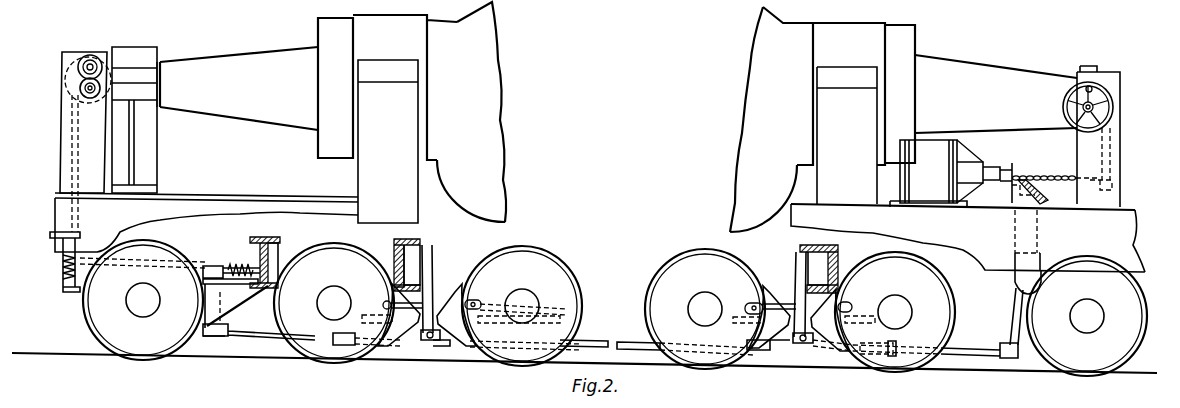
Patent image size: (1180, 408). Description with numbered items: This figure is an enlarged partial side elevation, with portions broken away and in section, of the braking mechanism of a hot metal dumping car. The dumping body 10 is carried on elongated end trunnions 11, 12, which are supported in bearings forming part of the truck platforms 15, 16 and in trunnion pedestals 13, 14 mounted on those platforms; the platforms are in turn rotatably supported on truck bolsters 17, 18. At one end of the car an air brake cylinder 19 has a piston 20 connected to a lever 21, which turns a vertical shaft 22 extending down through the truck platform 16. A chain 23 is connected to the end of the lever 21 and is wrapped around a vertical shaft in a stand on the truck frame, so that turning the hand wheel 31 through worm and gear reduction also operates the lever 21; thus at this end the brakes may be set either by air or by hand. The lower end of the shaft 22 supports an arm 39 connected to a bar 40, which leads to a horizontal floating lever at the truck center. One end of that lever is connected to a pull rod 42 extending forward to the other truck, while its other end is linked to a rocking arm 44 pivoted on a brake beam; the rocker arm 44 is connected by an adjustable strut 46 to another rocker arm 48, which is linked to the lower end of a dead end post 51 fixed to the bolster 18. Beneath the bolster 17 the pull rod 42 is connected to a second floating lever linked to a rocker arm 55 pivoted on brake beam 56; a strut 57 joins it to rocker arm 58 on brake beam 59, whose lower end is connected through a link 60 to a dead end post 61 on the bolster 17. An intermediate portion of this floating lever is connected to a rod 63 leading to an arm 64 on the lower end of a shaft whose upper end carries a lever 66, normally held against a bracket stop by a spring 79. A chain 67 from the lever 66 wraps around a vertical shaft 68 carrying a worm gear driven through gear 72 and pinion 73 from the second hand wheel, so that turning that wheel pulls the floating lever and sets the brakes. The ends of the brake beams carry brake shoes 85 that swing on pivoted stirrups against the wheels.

The hot metal dumping body 10 is at (412, 112).
The end trunnion 11 is at (227, 58).
The end trunnion 12 is at (990, 72).
The trunnion pedestal 13 is at (132, 53).
The trunnion pedestal 14 is at (1107, 78).
The truck platform 15 is at (53, 205).
The truck platform 16 is at (1133, 225).
The truck bolster 17 is at (280, 250).
The truck bolster 18 is at (838, 262).
The brake cylinder 19 is at (936, 173).
The piston 20 is at (995, 170).
The lever 21 is at (1015, 202).
The vertical shaft 22 is at (1030, 232).
The chain 23 is at (1045, 175).
The hand wheel 31 is at (1113, 106).
The arm 39 is at (1013, 288).
The bar 40 is at (980, 342).
The pull rod 42 is at (593, 342).
The rocking arm 44 is at (852, 308).
The strut 46 is at (790, 304).
The rocker arm 48 is at (747, 323).
The dead end post 51 is at (800, 262).
The rocker arm 55 is at (387, 303).
The brake beam 56 is at (367, 318).
The strut 57 is at (438, 303).
The rocker arm 58 is at (488, 318).
The brake beam 59 is at (487, 305).
The link 60 is at (433, 340).
The dead end post 61 is at (432, 260).
The rod 63 is at (257, 332).
The arm 64 is at (210, 336).
The lever 66 is at (207, 268).
The chain 67 is at (152, 270).
The vertical shaft 68 is at (67, 275).
The gear 72 is at (100, 62).
The pinion 73 is at (78, 88).
The spring 79 is at (237, 268).
The brake shoe 85 is at (401, 337).